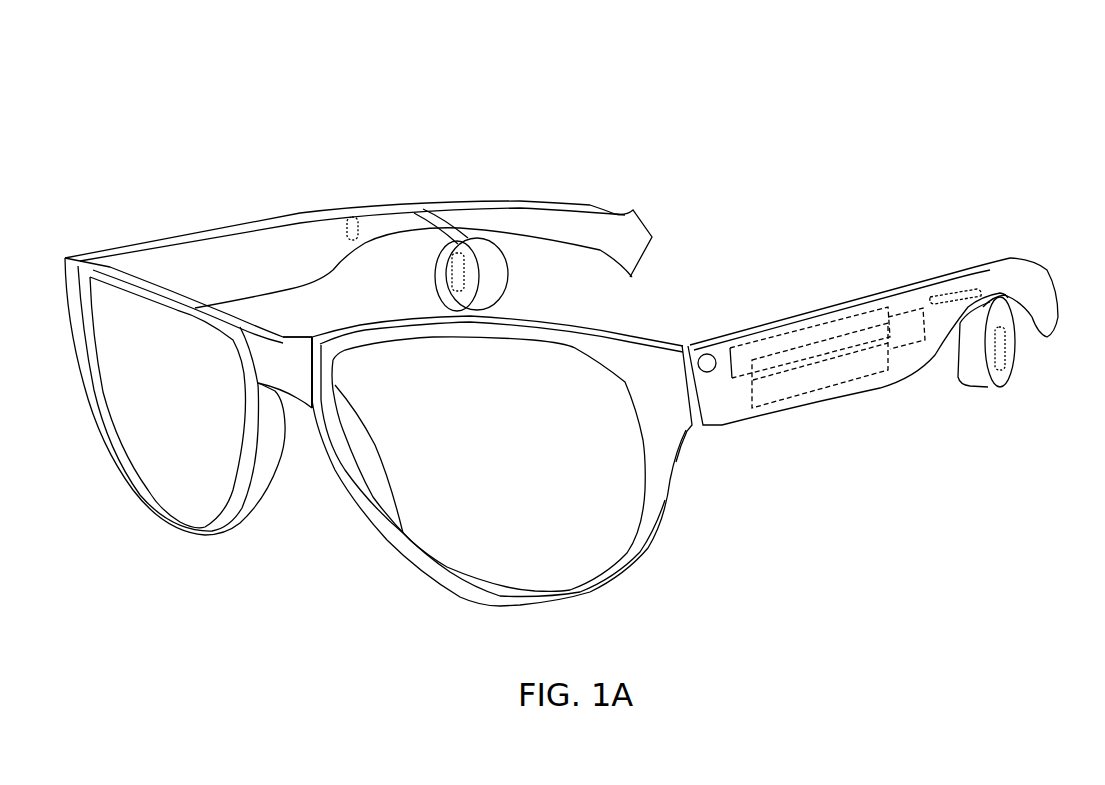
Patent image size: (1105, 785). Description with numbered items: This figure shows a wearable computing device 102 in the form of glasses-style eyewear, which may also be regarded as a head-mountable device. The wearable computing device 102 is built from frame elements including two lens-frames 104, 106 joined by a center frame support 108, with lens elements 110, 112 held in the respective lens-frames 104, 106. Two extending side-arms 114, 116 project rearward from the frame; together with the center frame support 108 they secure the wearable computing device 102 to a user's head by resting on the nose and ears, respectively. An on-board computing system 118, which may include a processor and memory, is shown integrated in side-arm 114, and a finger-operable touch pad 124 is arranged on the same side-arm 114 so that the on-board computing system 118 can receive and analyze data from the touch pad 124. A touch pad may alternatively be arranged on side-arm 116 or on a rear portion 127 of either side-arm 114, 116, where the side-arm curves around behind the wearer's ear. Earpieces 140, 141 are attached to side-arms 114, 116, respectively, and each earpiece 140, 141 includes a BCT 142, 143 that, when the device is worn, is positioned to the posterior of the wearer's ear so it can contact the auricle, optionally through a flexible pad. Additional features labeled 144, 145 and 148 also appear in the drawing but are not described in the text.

The wearable computing device 102 is at (902, 97).
The lens-frame 104 is at (209, 531).
The lens-frame 106 is at (500, 606).
The center frame support 108 is at (285, 352).
The lens element 110 is at (151, 478).
The lens element 112 is at (437, 555).
The extending side-arm 114 is at (880, 392).
The extending side-arm 116 is at (277, 237).
The on-board computing system 118 is at (852, 377).
The finger-operable touch pad 124 is at (727, 425).
The rear portion 127 is at (633, 211).
The earpiece 140 is at (1003, 386).
The earpiece 141 is at (510, 282).
The BCT 142 is at (976, 385).
The BCT 143 is at (433, 280).
The sensor slot 144 is at (951, 262).
The nose pad arm 145 is at (428, 211).
The hinge screw 148 is at (709, 353).